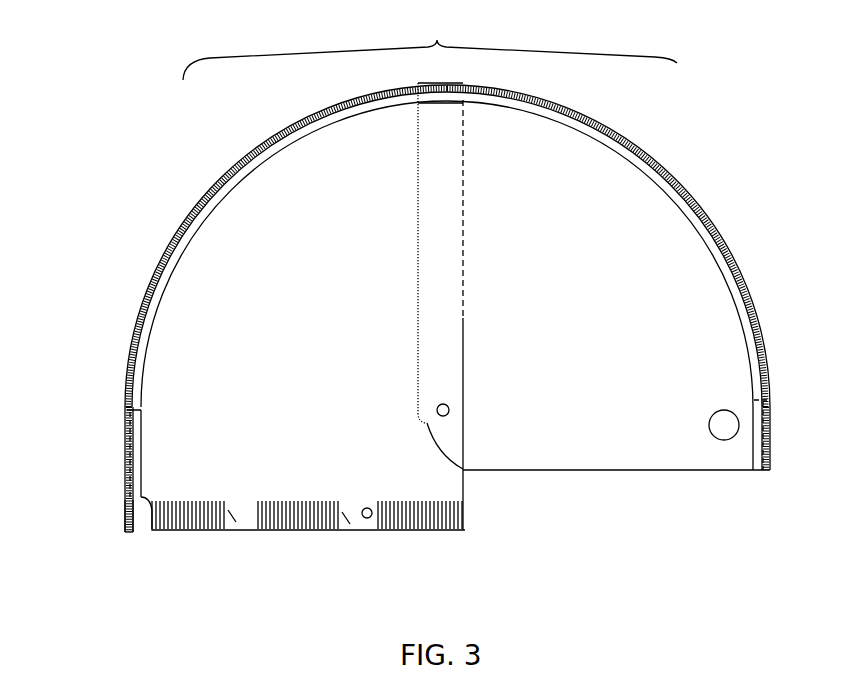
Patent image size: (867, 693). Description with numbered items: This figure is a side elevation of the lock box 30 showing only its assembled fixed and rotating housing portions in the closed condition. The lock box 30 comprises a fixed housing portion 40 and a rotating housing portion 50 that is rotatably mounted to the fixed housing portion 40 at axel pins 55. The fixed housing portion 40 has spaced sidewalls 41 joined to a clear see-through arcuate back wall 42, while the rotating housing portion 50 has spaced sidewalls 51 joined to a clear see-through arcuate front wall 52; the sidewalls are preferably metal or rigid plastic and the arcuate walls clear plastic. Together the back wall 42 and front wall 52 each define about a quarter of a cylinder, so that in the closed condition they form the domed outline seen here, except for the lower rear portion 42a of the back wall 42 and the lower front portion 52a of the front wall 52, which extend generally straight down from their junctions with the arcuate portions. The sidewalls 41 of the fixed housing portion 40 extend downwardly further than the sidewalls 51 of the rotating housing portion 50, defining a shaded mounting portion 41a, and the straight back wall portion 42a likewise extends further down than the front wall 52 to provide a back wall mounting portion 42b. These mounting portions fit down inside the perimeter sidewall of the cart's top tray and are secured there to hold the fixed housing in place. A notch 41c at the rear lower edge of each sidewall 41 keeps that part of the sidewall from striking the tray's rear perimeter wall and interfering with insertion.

The lock box 30 is at (430, 47).
The fixed housing portion 40 is at (268, 336).
The sidewalls 41 is at (300, 352).
The mounting portion 41a is at (474, 492).
The notch 41c is at (138, 534).
The arcuate back wall 42 is at (232, 308).
The lower rear portion of back wall 42a is at (108, 410).
The back wall mounting portion 42b is at (112, 500).
The rotating housing portion 50 is at (640, 277).
The sidewalls 51 is at (601, 326).
The arcuate front wall 52 is at (705, 207).
The lower front portion of front wall 52a is at (782, 402).
The axel pins 55 is at (440, 414).